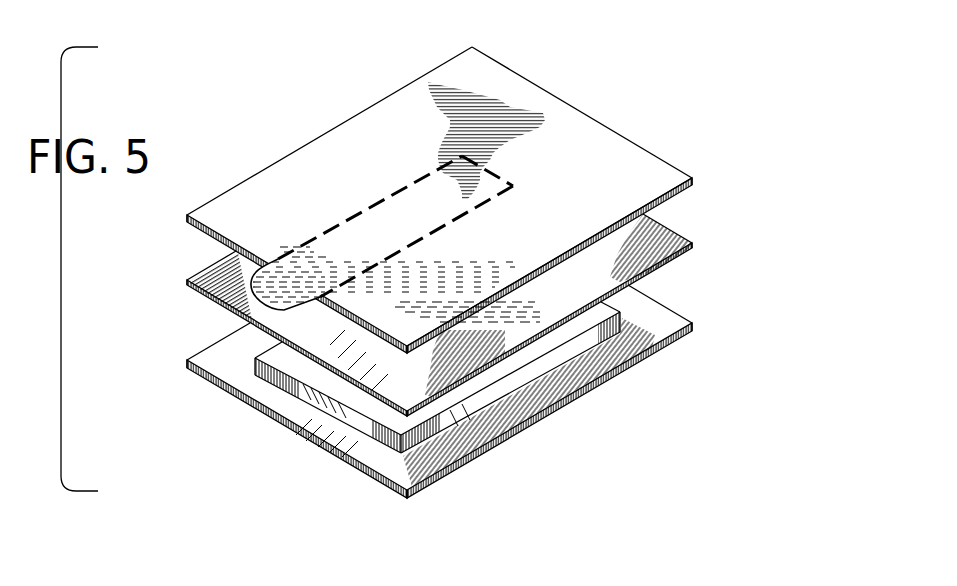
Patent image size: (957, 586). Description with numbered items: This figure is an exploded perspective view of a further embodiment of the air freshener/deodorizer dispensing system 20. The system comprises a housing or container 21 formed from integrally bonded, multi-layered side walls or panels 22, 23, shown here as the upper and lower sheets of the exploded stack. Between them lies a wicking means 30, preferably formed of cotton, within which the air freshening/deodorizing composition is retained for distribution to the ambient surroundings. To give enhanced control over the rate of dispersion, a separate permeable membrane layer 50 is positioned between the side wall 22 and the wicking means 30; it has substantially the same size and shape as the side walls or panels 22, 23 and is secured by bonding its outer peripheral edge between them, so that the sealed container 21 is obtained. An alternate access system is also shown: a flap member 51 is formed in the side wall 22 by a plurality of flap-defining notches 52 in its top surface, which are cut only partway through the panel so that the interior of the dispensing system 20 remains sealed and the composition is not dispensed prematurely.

The air freshener/deodorizer dispensing system 20 is at (577, 90).
The housing or container 21 is at (330, 158).
The side wall or panel 22 is at (653, 173).
The side wall or panel 23 is at (663, 320).
The wicking means 30 is at (298, 388).
The permeable membrane layer 50 is at (667, 238).
The flap member 51 is at (271, 280).
The flap-defining notches 52 is at (430, 173).